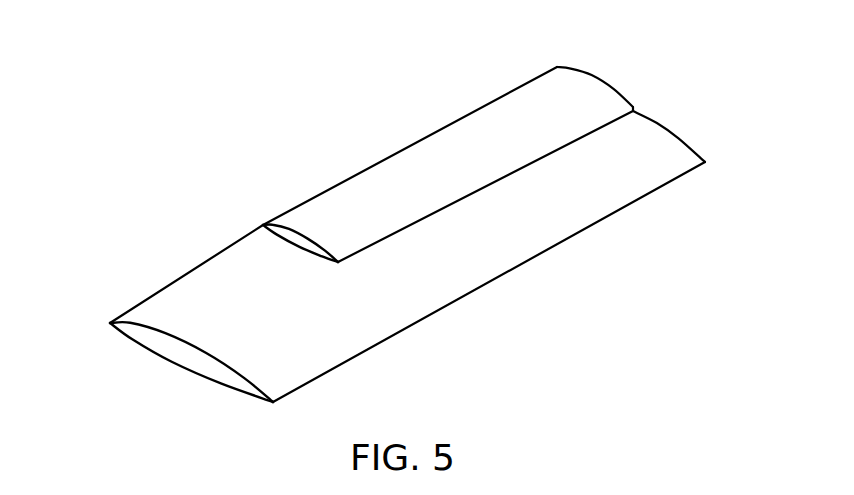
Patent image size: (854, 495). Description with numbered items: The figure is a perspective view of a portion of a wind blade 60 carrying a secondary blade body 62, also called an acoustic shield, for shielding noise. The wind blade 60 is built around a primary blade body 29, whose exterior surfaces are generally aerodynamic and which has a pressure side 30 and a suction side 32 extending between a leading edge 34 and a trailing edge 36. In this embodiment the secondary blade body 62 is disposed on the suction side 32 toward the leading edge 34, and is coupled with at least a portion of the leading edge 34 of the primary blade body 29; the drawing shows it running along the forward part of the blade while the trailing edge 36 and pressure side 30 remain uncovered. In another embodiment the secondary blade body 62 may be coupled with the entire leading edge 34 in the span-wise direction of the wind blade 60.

The wind blade 60 is at (226, 131).
The secondary blade body 62 is at (513, 101).
The suction side 32 is at (250, 270).
The leading edge 34 is at (157, 292).
The primary blade body 29 is at (130, 332).
The trailing edge 36 is at (353, 362).
The pressure side 30 is at (218, 410).